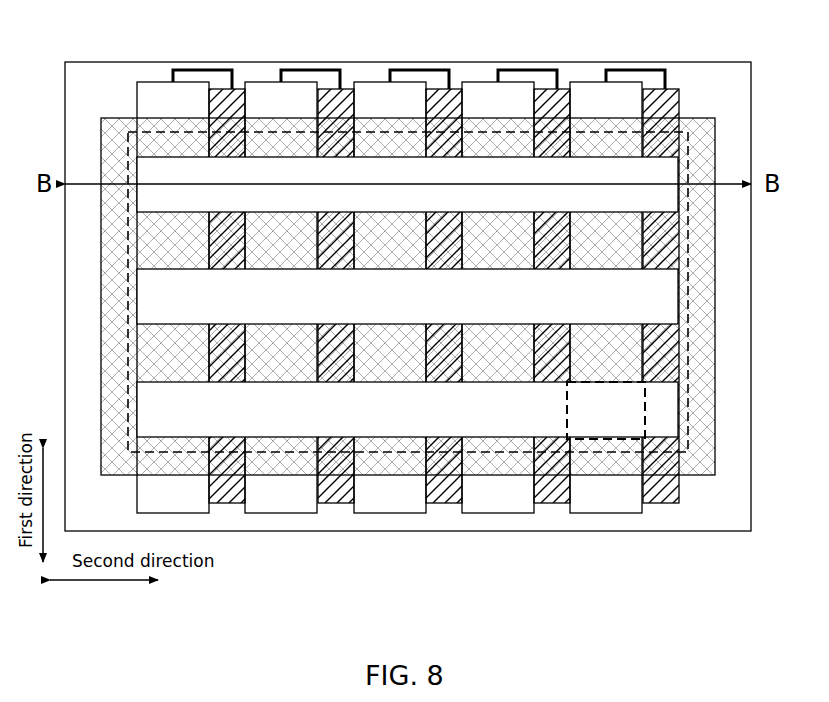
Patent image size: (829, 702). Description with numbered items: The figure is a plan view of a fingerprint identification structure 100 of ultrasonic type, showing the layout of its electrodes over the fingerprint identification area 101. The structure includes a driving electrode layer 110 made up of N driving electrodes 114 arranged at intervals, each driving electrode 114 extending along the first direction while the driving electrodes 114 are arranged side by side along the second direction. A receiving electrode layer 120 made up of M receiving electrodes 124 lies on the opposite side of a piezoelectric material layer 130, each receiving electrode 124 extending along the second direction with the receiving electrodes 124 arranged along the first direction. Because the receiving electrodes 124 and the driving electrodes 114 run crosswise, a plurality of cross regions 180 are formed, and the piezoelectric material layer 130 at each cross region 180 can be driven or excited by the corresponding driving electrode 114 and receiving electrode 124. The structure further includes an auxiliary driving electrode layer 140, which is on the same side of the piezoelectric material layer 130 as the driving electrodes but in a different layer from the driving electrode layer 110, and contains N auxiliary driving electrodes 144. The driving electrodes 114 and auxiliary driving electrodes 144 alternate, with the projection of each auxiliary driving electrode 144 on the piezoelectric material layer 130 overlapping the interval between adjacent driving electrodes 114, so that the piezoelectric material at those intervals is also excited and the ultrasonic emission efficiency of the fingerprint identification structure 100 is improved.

The fingerprint identification structure 100 is at (426, 619).
The fingerprint identification area 101 is at (397, 453).
The driving electrode layer 110 is at (389, 265).
The driving electrode 114 is at (270, 103).
The receiving electrode layer 120 is at (407, 227).
The receiving electrode 124 is at (400, 170).
The piezoelectric material layer 130 is at (590, 135).
The auxiliary driving electrode layer 140 is at (444, 337).
The auxiliary driving electrode 144 is at (225, 488).
The cross region 180 is at (607, 443).